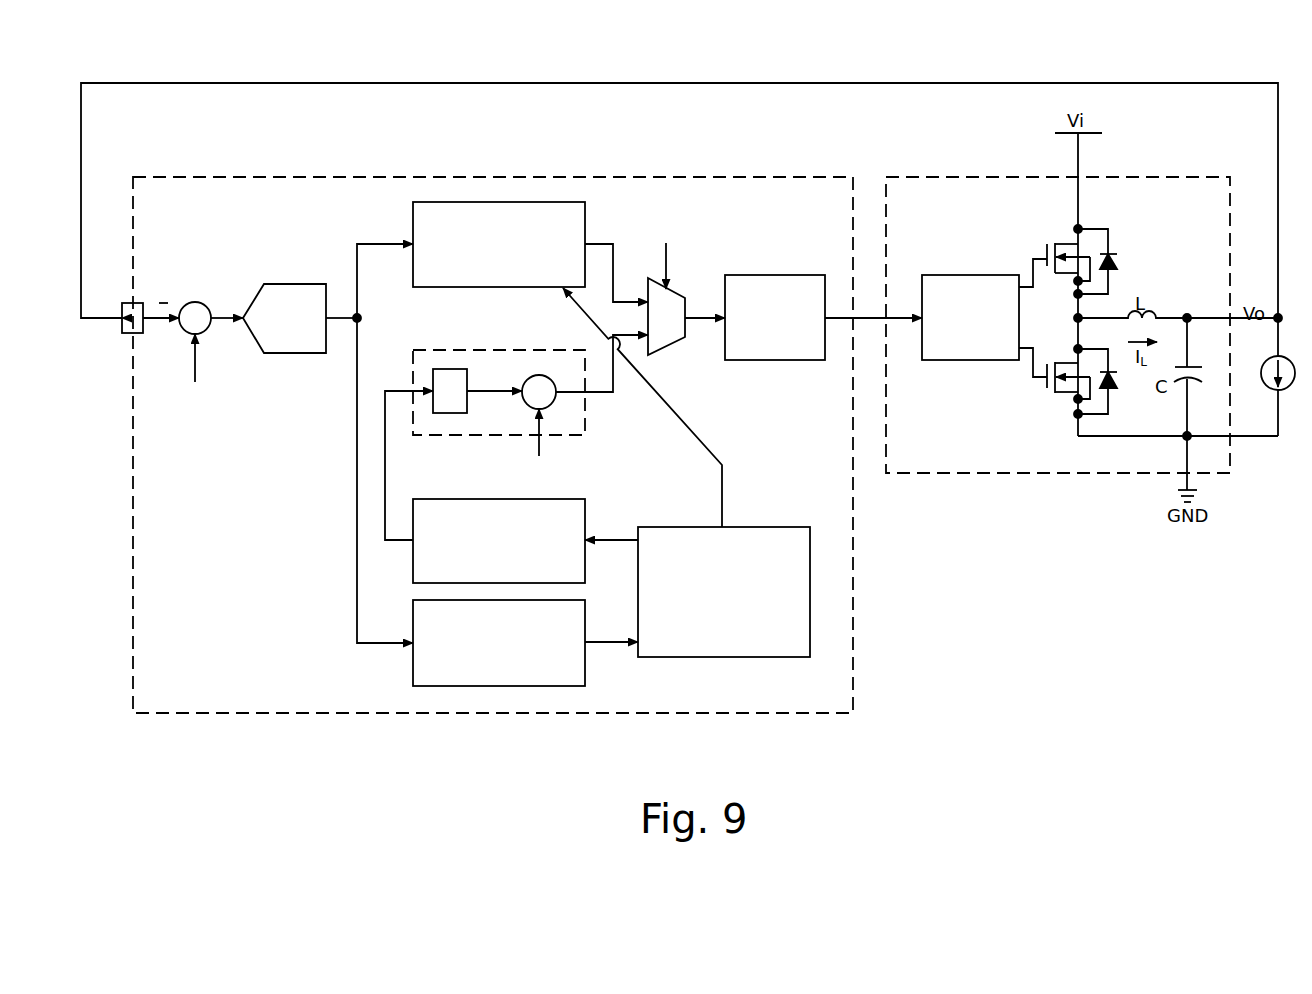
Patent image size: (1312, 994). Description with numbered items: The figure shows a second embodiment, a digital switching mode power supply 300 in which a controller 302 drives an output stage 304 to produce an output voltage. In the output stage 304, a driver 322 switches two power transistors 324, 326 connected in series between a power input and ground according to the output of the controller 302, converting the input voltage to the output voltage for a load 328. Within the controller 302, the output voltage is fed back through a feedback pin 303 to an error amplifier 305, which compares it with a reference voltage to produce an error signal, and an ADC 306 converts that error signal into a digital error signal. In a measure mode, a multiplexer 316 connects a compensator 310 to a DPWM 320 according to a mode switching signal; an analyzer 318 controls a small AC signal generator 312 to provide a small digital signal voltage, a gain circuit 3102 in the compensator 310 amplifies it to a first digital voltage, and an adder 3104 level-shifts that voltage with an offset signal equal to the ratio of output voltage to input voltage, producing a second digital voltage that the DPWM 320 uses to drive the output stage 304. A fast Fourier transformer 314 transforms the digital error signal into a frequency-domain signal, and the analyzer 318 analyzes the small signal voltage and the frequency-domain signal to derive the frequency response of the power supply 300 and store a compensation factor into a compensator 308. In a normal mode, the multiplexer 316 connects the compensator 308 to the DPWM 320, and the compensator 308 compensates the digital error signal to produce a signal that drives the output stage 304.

The digital switching mode power supply 300 is at (1127, 662).
The controller 302 is at (853, 522).
The feedback pin 303 is at (135, 303).
The output stage 304 is at (1070, 473).
The error amplifier 305 is at (195, 302).
The ADC 306 is at (303, 284).
The compensator 308 is at (497, 287).
The compensator 310 is at (585, 425).
The gain circuit 3102 is at (450, 413).
The adder 3104 is at (539, 375).
The small AC signal generator 312 is at (585, 515).
The fast Fourier transformer (FFT) 314 is at (413, 675).
The multiplexer 316 is at (667, 347).
The analyzer 318 is at (768, 527).
The DPWM 320 is at (773, 275).
The driver 322 is at (972, 275).
The power transistor 324 is at (1053, 237).
The power transistor 326 is at (1053, 398).
The load 328 is at (1262, 390).